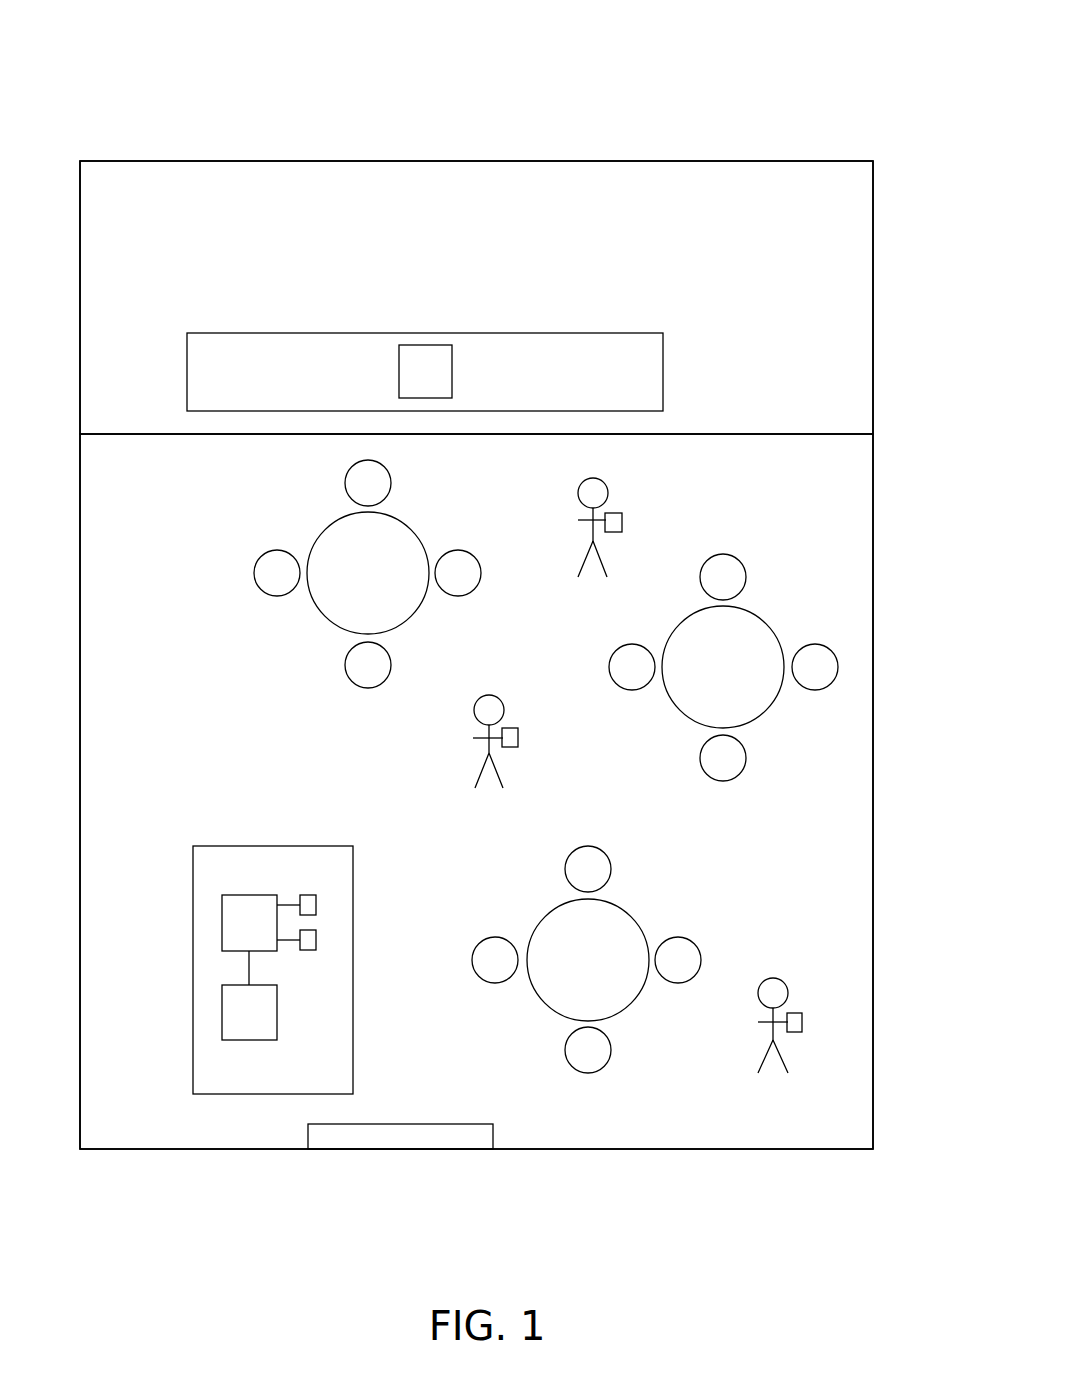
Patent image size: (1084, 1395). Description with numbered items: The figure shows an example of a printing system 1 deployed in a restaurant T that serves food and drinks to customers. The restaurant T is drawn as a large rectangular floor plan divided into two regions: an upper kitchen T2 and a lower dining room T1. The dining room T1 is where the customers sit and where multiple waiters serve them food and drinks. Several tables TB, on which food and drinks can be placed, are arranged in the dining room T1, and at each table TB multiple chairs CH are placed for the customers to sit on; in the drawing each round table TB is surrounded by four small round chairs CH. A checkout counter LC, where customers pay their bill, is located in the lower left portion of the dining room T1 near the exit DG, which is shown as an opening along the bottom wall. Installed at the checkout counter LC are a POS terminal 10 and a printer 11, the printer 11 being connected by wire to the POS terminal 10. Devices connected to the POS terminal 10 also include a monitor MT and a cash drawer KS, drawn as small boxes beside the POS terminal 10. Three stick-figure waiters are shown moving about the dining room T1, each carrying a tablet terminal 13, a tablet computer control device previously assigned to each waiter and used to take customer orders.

The printing system 1 is at (516, 73).
The restaurant T is at (732, 160).
The dining room T1 is at (846, 547).
The kitchen T2 is at (846, 347).
The table TB is at (383, 598).
The chair CH is at (366, 483).
The tablet terminal 13 is at (615, 532).
The checkout counter LC is at (290, 845).
The POS terminal 10 is at (222, 907).
The printer 11 is at (222, 1000).
The monitor MT is at (316, 905).
The cash drawer KS is at (316, 940).
The exit DG is at (446, 1137).